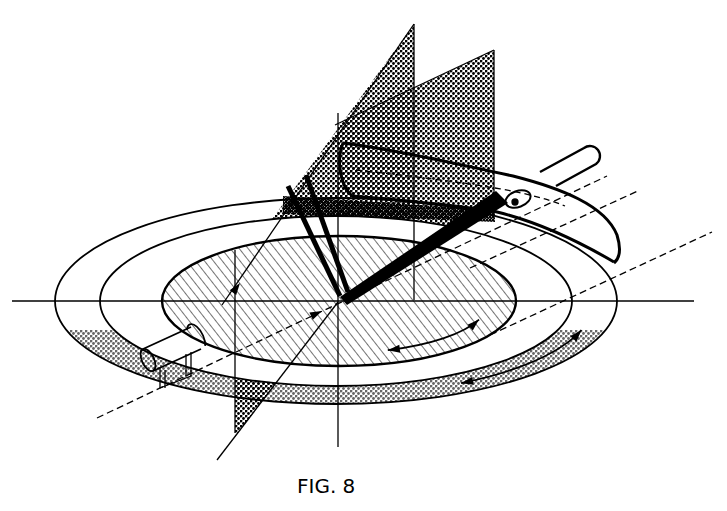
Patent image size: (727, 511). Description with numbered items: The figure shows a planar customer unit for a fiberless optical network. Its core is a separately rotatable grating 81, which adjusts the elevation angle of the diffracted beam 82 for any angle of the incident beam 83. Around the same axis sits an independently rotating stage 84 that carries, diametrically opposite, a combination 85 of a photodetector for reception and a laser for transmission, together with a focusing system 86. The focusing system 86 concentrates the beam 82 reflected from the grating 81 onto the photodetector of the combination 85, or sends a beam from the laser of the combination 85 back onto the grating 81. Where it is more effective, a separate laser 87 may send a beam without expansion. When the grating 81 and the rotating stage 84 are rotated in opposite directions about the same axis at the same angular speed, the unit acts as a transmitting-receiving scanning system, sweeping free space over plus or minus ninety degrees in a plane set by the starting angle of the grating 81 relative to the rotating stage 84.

The grating 81 is at (200, 283).
The diffracted beam 82 is at (470, 222).
The incident beam 83 is at (284, 198).
The rotating stage 84 is at (596, 325).
The combination of photodetector and laser 85 is at (173, 348).
The focusing system 86 is at (505, 180).
The separate laser 87 is at (568, 170).